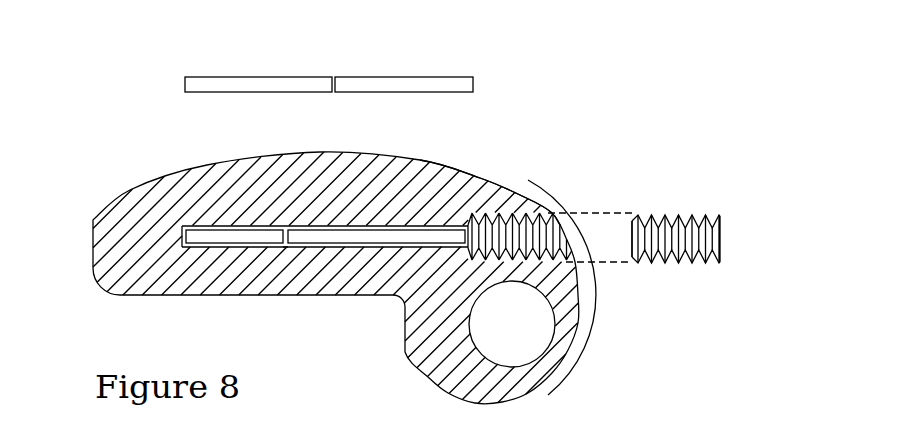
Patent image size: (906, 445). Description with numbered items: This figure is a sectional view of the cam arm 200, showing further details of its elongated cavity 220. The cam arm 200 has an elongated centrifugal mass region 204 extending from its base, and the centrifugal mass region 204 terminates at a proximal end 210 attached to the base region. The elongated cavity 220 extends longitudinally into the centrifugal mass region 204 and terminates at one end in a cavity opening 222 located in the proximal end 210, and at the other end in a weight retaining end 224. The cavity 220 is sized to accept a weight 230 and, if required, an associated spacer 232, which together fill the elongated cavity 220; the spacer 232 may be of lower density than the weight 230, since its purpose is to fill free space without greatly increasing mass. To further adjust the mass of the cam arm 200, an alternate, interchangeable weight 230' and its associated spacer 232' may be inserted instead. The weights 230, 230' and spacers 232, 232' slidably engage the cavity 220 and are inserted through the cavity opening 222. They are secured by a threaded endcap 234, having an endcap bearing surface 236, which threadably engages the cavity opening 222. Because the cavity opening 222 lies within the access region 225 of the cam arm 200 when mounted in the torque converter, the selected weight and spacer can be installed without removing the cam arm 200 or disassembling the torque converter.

The cam arm 200 is at (513, 128).
The centrifugal mass region 204 is at (205, 163).
The proximal end 210 is at (493, 195).
The elongated cavity 220 is at (290, 247).
The cavity opening 222 is at (541, 243).
The weight retaining end 224 is at (182, 228).
The access region 225 is at (581, 357).
The weight 230 is at (234, 177).
The associated spacer 232 is at (376, 177).
The interchangeable weight 230' is at (270, 53).
The associated spacer 232' is at (419, 53).
The threaded endcap 234 is at (700, 215).
The endcap bearing surface 236 is at (633, 238).